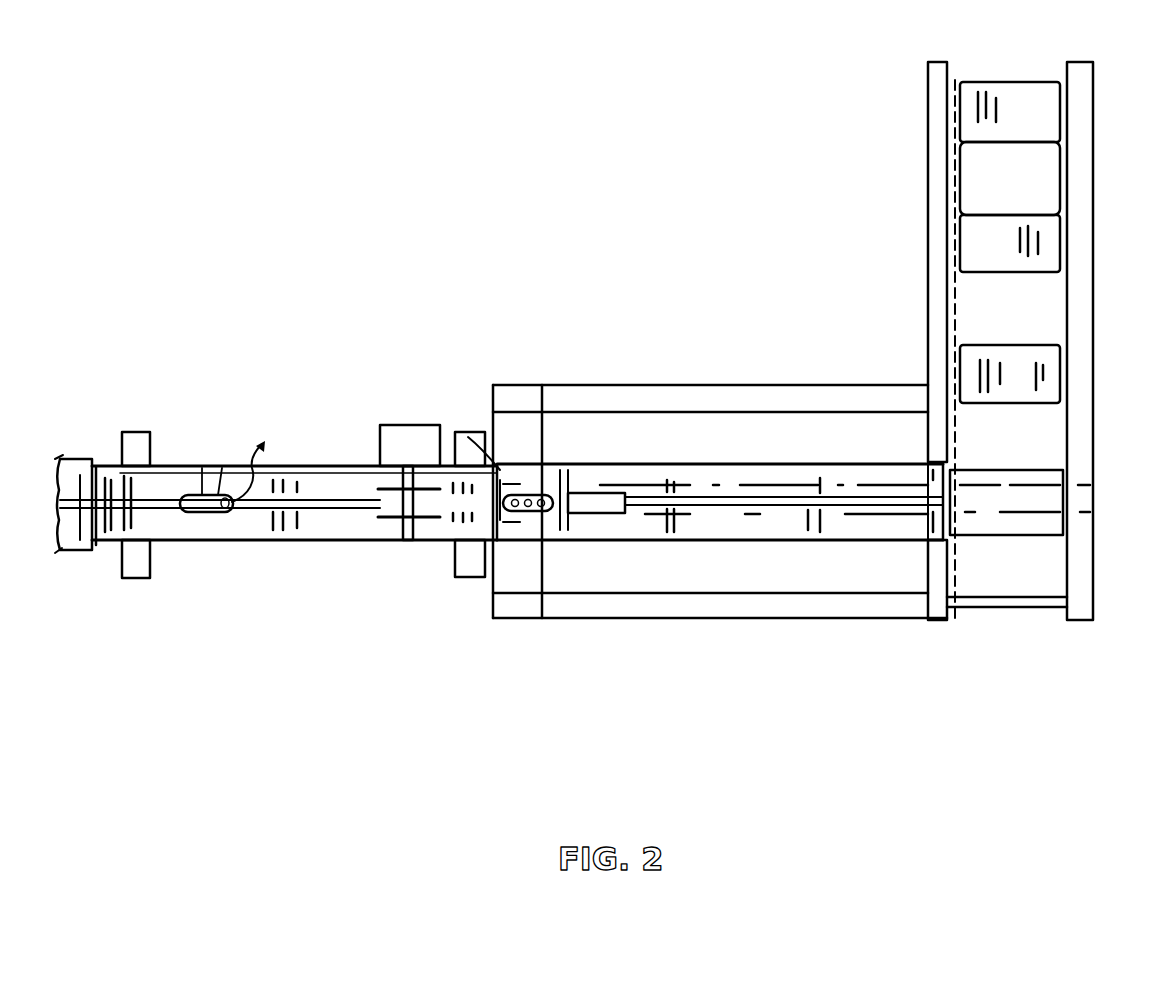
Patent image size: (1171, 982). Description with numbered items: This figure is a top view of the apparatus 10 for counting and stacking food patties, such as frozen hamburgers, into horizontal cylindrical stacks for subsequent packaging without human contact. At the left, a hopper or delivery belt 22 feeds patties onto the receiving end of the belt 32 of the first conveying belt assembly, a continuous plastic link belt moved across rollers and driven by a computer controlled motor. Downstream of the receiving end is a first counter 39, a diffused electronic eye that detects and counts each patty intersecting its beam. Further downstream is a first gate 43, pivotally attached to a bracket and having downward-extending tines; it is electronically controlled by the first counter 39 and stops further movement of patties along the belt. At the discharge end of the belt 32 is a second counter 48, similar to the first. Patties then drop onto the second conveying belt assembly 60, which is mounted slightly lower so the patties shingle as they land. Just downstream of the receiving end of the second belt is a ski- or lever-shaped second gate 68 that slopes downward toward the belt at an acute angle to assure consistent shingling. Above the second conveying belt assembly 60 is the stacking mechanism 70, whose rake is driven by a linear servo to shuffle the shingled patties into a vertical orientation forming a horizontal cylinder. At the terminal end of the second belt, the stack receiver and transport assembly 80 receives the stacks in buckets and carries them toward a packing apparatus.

The apparatus 10 is at (395, 318).
The delivery belt 22 is at (71, 470).
The belt 32 is at (318, 480).
The first counter 39 is at (190, 516).
The first gate 43 is at (411, 543).
The second counter 48 is at (552, 492).
The second conveying belt assembly 60 is at (640, 448).
The second gate 68 is at (614, 516).
The stacking mechanism 70 is at (747, 520).
The stack receiver and transport assembly 80 is at (1108, 280).